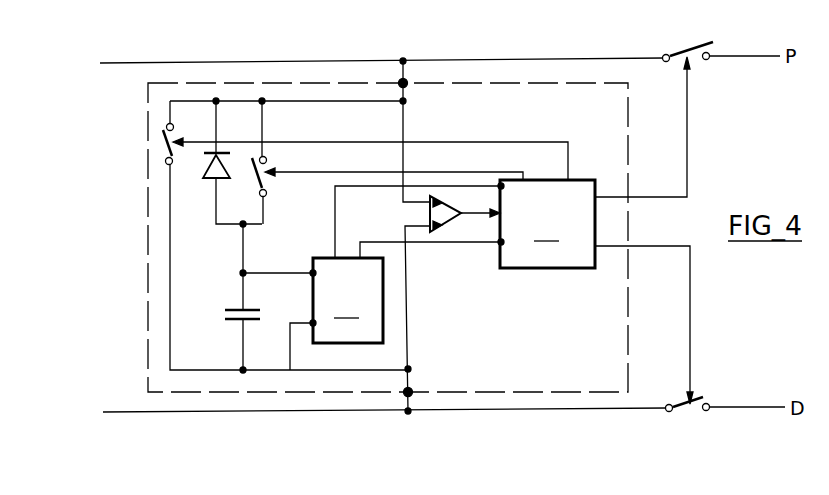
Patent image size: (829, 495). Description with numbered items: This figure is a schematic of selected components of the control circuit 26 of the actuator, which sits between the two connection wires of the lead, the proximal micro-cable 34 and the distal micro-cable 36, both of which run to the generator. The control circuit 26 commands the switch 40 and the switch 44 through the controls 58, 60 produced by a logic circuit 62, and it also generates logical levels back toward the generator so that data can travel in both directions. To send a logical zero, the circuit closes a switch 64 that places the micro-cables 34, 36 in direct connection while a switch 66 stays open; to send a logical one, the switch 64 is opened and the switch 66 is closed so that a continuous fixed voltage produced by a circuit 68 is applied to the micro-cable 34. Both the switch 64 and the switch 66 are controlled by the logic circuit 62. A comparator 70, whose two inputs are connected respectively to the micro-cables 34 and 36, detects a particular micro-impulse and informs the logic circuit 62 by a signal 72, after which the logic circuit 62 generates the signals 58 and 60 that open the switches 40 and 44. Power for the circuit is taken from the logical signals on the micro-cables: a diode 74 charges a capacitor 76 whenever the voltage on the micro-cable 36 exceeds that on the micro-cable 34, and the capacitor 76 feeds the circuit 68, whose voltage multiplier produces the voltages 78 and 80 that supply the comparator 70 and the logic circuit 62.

The control circuit 26 is at (148, 237).
The proximal micro-cable 34 is at (128, 61).
The distal micro-cable 36 is at (121, 411).
The switch 40 is at (711, 42).
The switch 44 is at (678, 405).
The control signal 58 is at (688, 146).
The control signal 60 is at (690, 297).
The logic circuit 62 is at (547, 224).
The switch 64 is at (162, 133).
The switch 66 is at (268, 183).
The voltage circuit 68 is at (348, 300).
The comparator 70 is at (447, 235).
The signal 72 is at (473, 209).
The diode 74 is at (208, 170).
The capacitor 76 is at (236, 306).
The supply voltage 78 is at (335, 210).
The supply voltage 80 is at (375, 242).